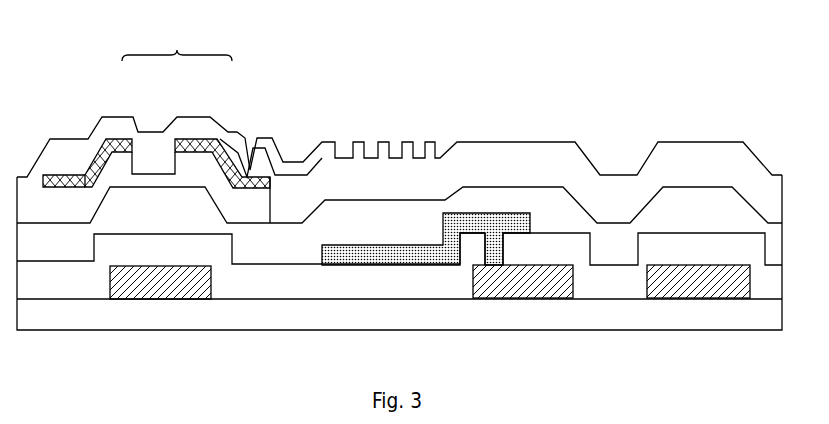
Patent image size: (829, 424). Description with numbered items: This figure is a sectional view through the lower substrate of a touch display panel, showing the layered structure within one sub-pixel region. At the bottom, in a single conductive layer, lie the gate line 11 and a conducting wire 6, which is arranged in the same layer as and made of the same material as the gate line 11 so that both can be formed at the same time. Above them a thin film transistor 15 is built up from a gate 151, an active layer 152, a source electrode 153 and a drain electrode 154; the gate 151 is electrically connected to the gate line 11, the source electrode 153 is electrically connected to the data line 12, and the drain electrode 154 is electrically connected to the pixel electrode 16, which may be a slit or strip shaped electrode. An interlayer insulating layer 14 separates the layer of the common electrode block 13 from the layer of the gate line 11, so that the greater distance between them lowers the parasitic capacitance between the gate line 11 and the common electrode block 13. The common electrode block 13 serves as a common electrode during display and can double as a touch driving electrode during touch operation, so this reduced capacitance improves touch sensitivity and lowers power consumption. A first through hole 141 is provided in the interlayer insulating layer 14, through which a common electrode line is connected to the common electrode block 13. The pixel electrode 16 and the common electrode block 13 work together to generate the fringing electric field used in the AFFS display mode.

The conducting wire 6 is at (540, 277).
The gate line 11 is at (705, 277).
The data line 12 is at (62, 182).
The common electrode block 13 is at (462, 218).
The interlayer insulating layer 14 is at (615, 277).
The first through hole 141 is at (485, 245).
The thin film transistor 15 is at (177, 43).
The gate 151 is at (133, 280).
The active layer 152 is at (179, 172).
The source electrode 153 is at (110, 144).
The drain electrode 154 is at (218, 142).
The pixel electrode 16 is at (322, 150).